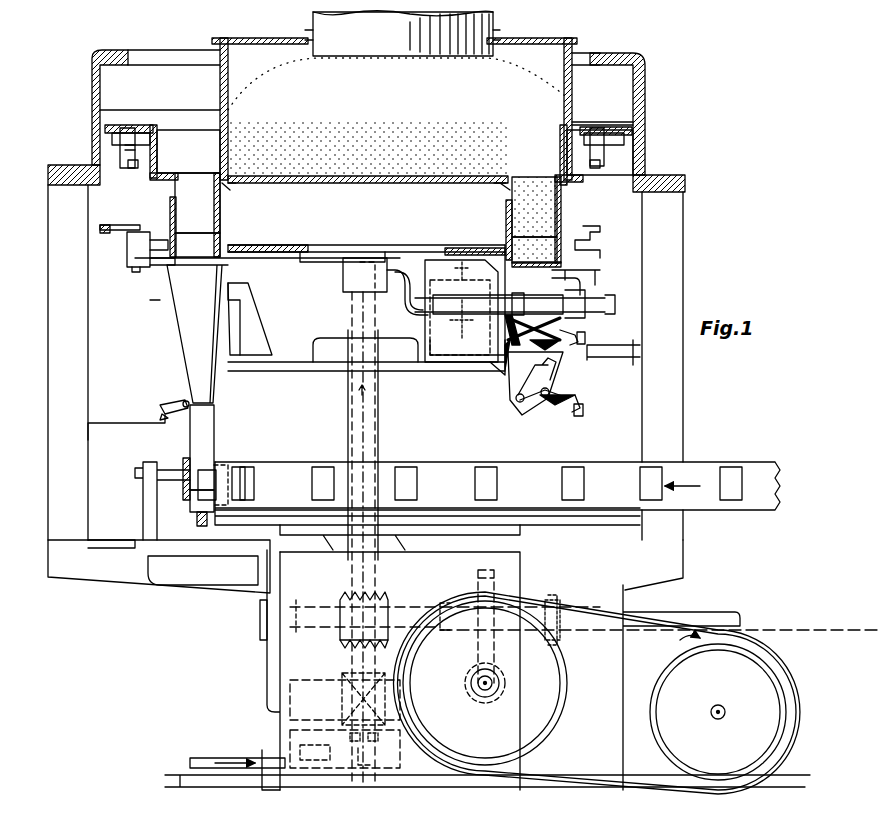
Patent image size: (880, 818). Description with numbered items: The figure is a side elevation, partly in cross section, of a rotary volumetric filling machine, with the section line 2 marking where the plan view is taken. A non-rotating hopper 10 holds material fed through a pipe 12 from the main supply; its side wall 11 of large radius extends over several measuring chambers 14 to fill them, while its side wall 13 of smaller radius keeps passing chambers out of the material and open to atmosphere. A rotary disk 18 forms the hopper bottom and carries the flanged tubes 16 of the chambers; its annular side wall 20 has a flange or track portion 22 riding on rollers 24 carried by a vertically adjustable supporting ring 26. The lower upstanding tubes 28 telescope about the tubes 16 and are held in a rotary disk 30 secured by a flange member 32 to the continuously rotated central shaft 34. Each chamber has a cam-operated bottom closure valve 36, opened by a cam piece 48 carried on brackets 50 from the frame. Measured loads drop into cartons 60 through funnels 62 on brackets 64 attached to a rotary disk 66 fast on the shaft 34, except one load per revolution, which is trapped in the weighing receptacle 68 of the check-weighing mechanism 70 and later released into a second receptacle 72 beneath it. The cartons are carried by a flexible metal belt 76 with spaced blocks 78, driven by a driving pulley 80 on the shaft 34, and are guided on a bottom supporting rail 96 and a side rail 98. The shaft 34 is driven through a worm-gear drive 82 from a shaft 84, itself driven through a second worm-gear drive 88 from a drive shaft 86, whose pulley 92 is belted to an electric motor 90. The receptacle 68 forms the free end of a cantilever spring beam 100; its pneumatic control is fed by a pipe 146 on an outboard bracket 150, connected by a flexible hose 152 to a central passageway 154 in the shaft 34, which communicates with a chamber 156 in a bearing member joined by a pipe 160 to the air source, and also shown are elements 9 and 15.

The section line 2— 2 is at (150, 110).
The drive shaft of cylinder 9 is at (315, 20).
The hopper 10 is at (265, 40).
The side wall 11 is at (570, 90).
The pipe 12 is at (493, 28).
The side wall 13 is at (225, 97).
The measuring chambers 14 is at (535, 190).
The cover plate right 15 is at (580, 125).
The flanged tubes 16 is at (236, 200).
The rotary disk 18 is at (388, 176).
The annular side wall 20 is at (158, 150).
The flange or track portion 22 is at (140, 135).
The rollers 24 is at (138, 168).
The supporting ring 26 is at (110, 128).
The upstanding tubes 28 is at (232, 226).
The rotary disk 30 is at (310, 245).
The flange member 32 is at (342, 268).
The central shaft 34 is at (350, 310).
The bottom closure valve 36 is at (168, 268).
The cam piece 48 is at (105, 228).
The brackets 50 is at (135, 255).
The cartons 60 is at (200, 452).
The funnels 62 is at (195, 347).
The brackets 64 is at (252, 300).
The rotary disk 66 is at (290, 370).
The weighing receptacle 68 is at (608, 300).
The check-weighing mechanism 70 is at (648, 278).
The second receptacle 72 is at (565, 376).
The flexible metal belt 76 is at (713, 462).
The blocks 78 is at (230, 475).
The driving pulley 80 is at (405, 462).
The worm-gear drive 82 is at (333, 602).
The shaft 84 is at (450, 640).
The drive shaft 86 is at (483, 690).
The second worm-gear drive 88 is at (500, 675).
The electric motor 90 is at (748, 675).
The pulley 92 is at (548, 718).
The bottom supporting rail 96 is at (230, 530).
The side rail 98 is at (182, 488).
The cantilever spring beam 100 is at (442, 270).
The pipe 146 is at (443, 300).
The outboard bracket 150 is at (385, 738).
The flexible hose 152 is at (407, 303).
The central passageway 154 is at (348, 327).
The chamber 156 is at (355, 740).
The pipe 160 is at (205, 755).